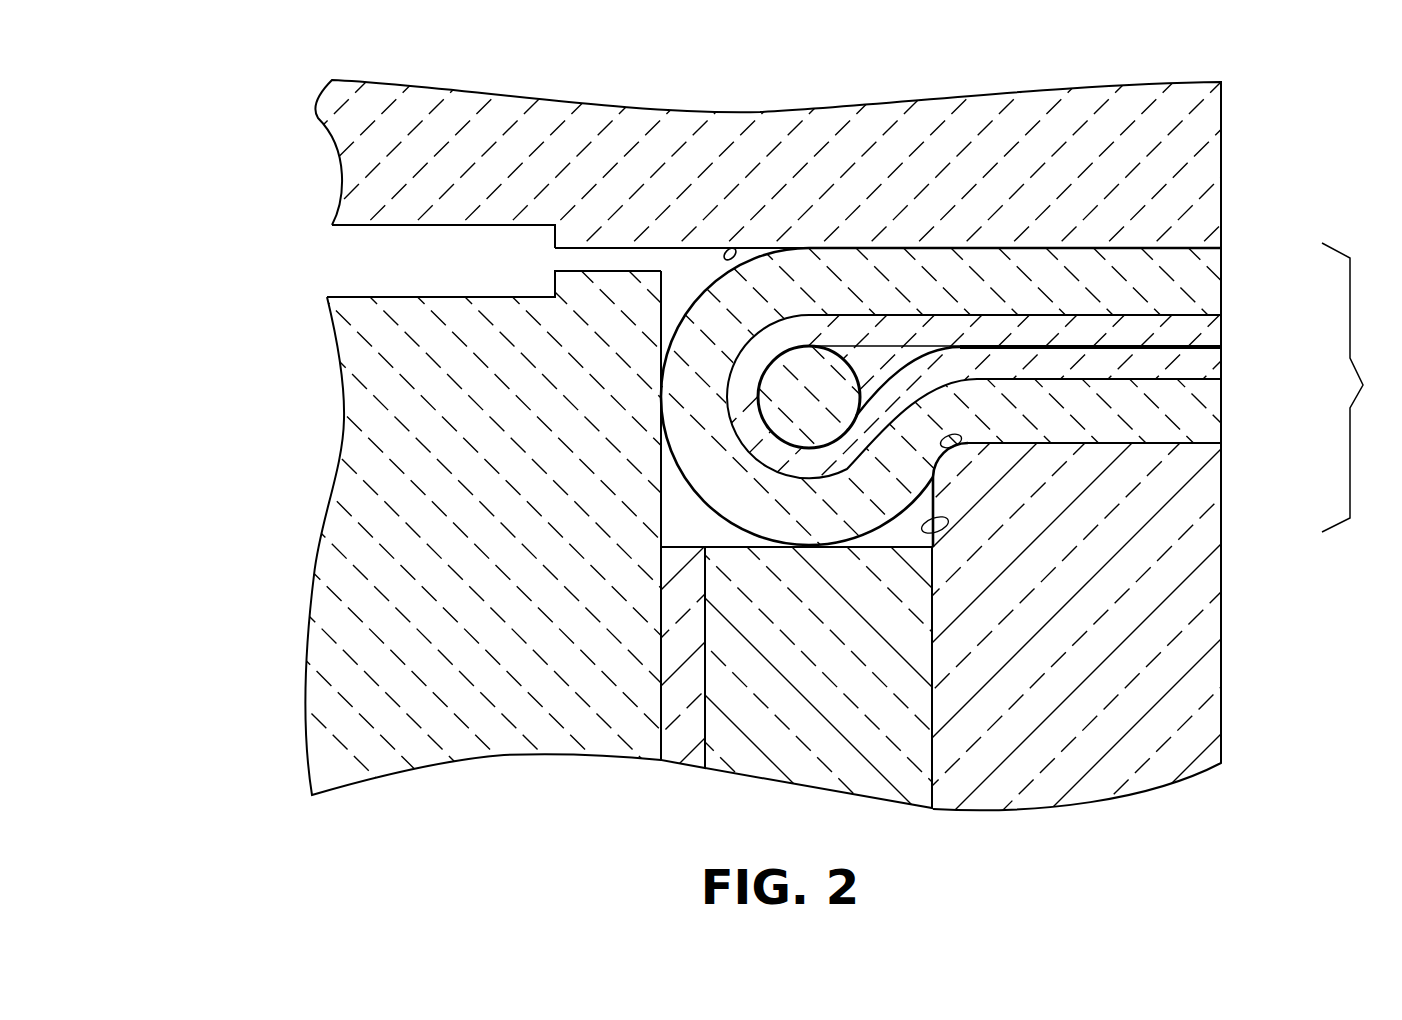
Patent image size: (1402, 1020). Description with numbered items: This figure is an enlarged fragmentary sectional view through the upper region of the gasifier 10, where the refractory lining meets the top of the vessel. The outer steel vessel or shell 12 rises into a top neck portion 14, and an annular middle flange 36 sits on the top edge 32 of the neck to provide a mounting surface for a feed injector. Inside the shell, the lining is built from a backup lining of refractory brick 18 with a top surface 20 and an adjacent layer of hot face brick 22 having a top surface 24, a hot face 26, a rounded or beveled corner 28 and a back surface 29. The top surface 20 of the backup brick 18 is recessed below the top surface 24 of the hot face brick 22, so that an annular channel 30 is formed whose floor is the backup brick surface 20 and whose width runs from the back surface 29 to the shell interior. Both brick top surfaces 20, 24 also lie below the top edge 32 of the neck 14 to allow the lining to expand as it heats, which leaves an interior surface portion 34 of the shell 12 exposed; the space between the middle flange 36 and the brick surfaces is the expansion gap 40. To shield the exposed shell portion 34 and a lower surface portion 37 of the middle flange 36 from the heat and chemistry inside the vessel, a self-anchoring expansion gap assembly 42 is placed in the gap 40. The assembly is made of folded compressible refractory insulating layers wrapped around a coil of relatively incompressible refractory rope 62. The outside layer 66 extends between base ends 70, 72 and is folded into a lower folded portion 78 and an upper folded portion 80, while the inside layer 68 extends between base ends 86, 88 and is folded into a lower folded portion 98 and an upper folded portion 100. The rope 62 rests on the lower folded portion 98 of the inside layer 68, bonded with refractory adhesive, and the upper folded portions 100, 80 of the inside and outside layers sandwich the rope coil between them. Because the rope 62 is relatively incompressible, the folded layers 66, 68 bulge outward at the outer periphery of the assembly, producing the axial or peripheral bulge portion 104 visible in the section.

The gasifier 10 is at (216, 165).
The outer steel vessel or shell 12 is at (579, 534).
The top neck portion 14 is at (365, 453).
The backup lining of refractory brick 18 is at (916, 822).
The top surface of backup brick 20 is at (877, 537).
The hot face brick 22 is at (1033, 822).
The top surface of hot face brick 24 is at (1210, 440).
The hot face 26 is at (1222, 685).
The rounded or beveled corner 28 is at (958, 447).
The back surface of hot face brick 29 is at (945, 530).
The annular channel 30 is at (683, 518).
The top edge of gasifier neck 32 is at (607, 268).
The interior surface portion of shell 34 is at (661, 298).
The annular middle flange 36 is at (1222, 162).
The lower surface portion of middle flange 37 is at (740, 243).
The expansion gap 40 is at (1362, 387).
The self-anchoring expansion gap assembly 42 is at (847, 238).
The refractory rope 62 is at (823, 377).
The outside layer 66 is at (1150, 247).
The inside layer 68 is at (1048, 313).
The base end of outside layer 70 is at (1222, 397).
The base end of outside layer 72 is at (1222, 285).
The lower folded portion of outside layer 78 is at (1210, 421).
The upper folded portion of outside layer 80 is at (1222, 258).
The base end of inside layer 86 is at (1222, 370).
The base end of inside layer 88 is at (1222, 318).
The lower folded portion of inside layer 98 is at (1222, 355).
The upper folded portion of inside layer 100 is at (1222, 333).
The axial bulge / peripheral bulge portion 104 is at (722, 516).